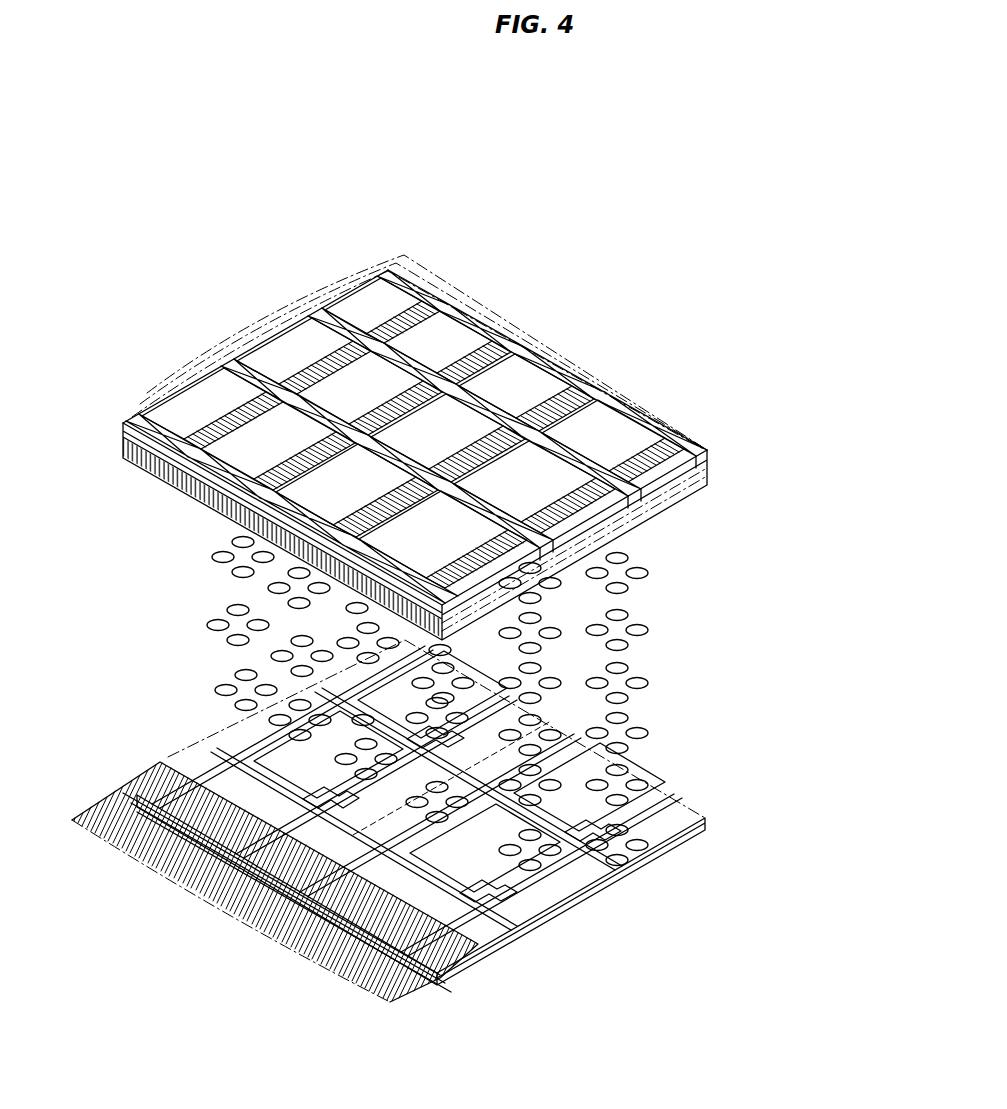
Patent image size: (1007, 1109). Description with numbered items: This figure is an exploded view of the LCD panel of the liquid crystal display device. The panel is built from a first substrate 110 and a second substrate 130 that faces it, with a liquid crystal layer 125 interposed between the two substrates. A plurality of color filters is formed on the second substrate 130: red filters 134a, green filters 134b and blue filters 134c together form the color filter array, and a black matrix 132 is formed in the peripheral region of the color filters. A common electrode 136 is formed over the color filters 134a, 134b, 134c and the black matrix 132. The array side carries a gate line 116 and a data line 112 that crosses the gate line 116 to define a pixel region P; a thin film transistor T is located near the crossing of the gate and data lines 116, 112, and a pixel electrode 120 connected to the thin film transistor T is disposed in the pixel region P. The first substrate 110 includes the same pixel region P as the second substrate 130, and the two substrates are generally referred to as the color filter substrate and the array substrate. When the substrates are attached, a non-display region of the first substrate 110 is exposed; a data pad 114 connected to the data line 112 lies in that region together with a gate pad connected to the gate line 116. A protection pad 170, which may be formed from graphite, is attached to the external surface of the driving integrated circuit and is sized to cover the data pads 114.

The first substrate 110 is at (677, 782).
The data line 112 is at (540, 902).
The data pad 114 is at (413, 980).
The gate line 116 is at (480, 950).
The pixel electrode 120 is at (555, 865).
The liquid crystal layer 125 is at (650, 666).
The second substrate 130 is at (158, 503).
The black matrix 132 is at (145, 425).
The red filters 134a is at (413, 290).
The green filters 134b is at (487, 318).
The blue filters 134c is at (550, 368).
The common electrode 136 is at (207, 498).
The protection pad 170 is at (292, 986).
The pixel region P is at (353, 800).
The thin film transistor T is at (440, 870).